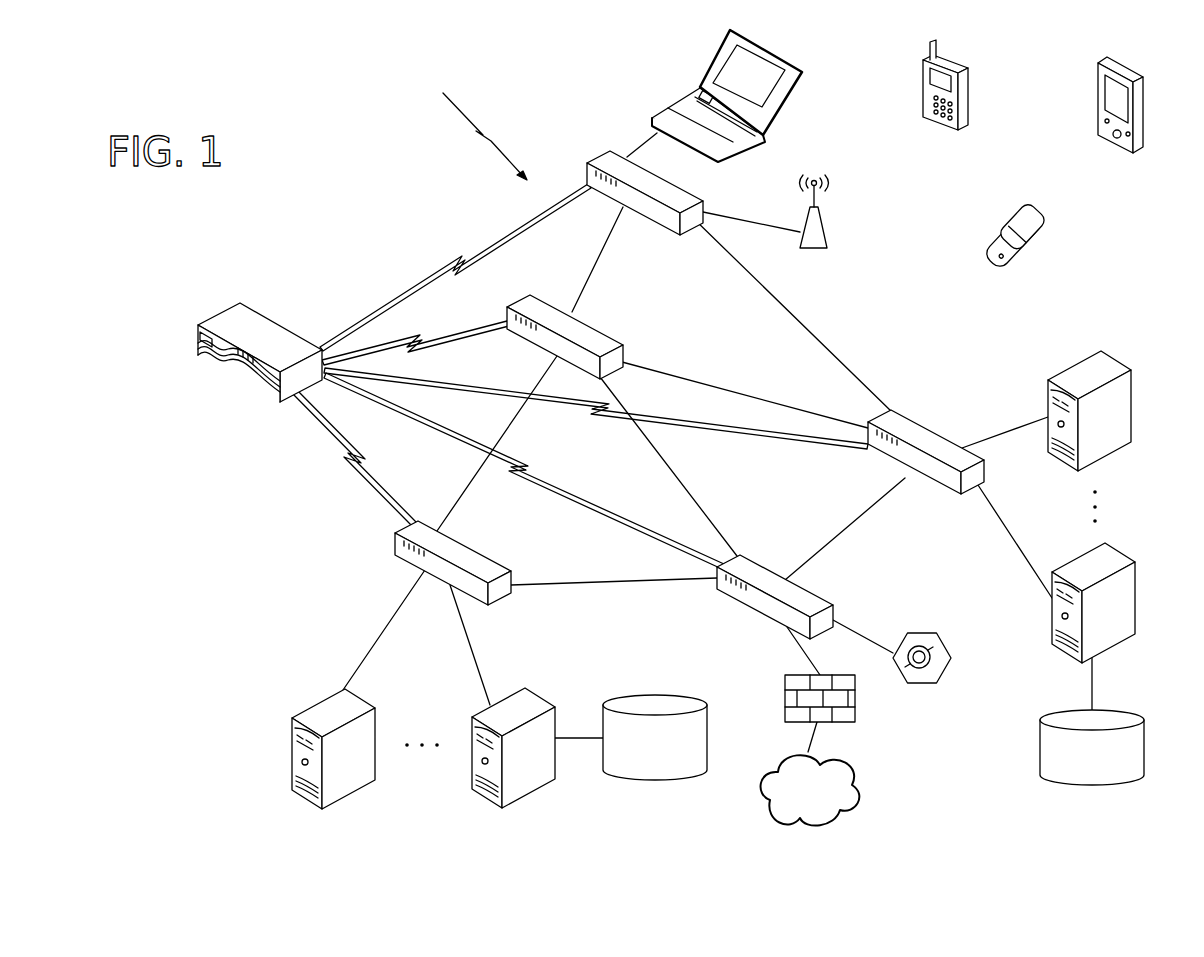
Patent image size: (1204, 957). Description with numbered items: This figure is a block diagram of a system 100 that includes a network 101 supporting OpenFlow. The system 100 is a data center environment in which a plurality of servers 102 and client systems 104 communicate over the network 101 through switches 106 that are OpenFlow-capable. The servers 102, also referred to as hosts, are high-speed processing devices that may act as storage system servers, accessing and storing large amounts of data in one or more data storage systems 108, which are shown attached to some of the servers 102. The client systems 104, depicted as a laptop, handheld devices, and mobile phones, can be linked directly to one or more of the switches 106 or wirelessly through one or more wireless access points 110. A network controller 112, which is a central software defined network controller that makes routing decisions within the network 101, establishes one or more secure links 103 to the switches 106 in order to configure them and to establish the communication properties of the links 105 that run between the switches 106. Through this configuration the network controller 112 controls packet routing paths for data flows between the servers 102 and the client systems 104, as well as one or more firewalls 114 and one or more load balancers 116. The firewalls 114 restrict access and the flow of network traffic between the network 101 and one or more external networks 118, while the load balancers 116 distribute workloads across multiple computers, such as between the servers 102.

The system 100 is at (323, 69).
The network 101 is at (472, 123).
The servers 102 is at (1117, 358).
The secure links 103 is at (452, 262).
The client systems 104 is at (773, 54).
The links 105 is at (618, 235).
The switches 106 is at (690, 192).
The data storage systems 108 is at (676, 761).
The wireless access points 110 is at (828, 218).
The network controller 112 is at (262, 306).
The firewalls 114 is at (785, 678).
The load balancers 116 is at (920, 632).
The external networks 118 is at (829, 807).